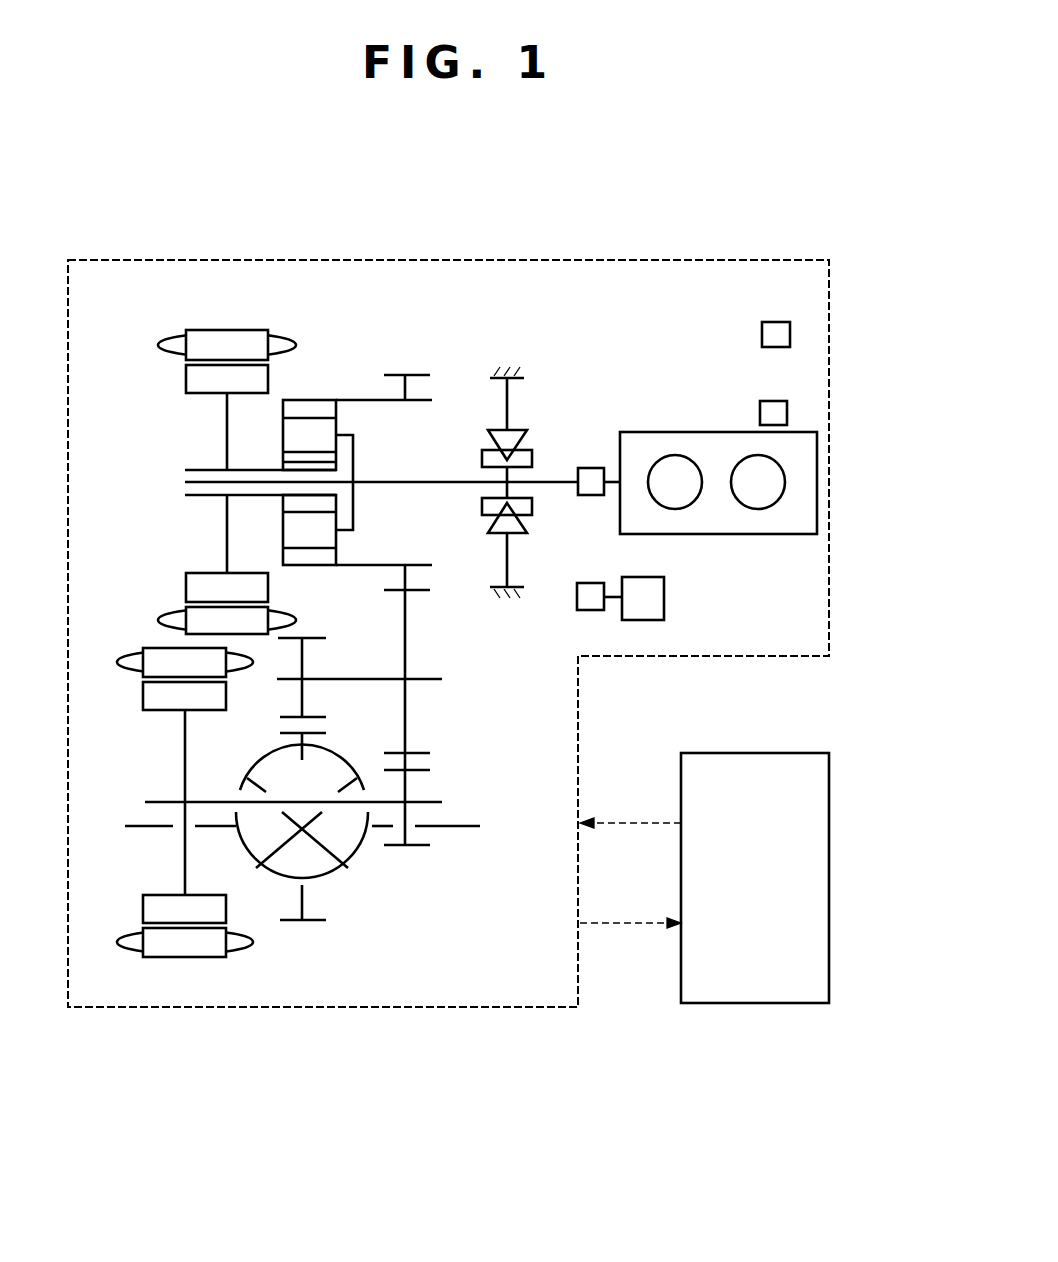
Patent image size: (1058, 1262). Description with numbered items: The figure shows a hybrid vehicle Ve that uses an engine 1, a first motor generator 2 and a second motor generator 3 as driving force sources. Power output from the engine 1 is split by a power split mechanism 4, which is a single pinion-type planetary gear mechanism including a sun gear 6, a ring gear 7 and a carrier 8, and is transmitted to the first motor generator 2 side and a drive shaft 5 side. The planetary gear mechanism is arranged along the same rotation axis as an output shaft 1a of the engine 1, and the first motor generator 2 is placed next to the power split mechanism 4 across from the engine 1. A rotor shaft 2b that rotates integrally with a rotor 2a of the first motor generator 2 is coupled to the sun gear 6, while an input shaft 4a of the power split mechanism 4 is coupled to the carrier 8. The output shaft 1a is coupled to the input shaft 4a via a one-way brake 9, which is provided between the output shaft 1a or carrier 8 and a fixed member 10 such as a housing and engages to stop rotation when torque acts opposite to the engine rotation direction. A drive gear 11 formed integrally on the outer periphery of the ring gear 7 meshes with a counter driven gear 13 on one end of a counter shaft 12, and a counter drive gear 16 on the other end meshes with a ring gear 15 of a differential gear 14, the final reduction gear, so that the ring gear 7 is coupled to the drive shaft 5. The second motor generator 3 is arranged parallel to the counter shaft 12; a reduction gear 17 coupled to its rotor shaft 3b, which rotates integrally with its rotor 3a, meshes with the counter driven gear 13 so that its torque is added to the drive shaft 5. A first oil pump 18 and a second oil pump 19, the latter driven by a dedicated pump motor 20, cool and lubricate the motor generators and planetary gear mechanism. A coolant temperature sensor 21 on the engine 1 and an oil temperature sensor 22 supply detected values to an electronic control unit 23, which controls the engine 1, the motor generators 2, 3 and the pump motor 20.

The vehicle Ve is at (596, 254).
The engine 1 is at (718, 534).
The output shaft 1a is at (556, 484).
The first motor generator 2 is at (148, 372).
The rotor 2a is at (188, 594).
The rotor shaft 2b is at (255, 497).
The second motor generator 3 is at (143, 739).
The rotor 3a is at (146, 910).
The rotor shaft 3b is at (208, 802).
The power split mechanism 4 is at (357, 462).
The input shaft 4a is at (428, 481).
The drive shaft 5 is at (125, 812).
The sun gear 6 is at (290, 462).
The ring gear 7 is at (310, 400).
The carrier 8 is at (360, 450).
The one-way brake 9 is at (526, 413).
The fixed member 10 is at (512, 598).
The drive gear 11 is at (397, 375).
The counter shaft 12 is at (352, 678).
The counter driven gear 13 is at (385, 592).
The differential gear 14 is at (346, 878).
The ring gear 15 is at (293, 922).
The counter drive gear 16 is at (310, 637).
The reduction gear 17 is at (410, 847).
The first oil pump 18 is at (592, 467).
The second oil pump 19 is at (588, 610).
The pump motor 20 is at (637, 585).
The coolant temperature sensor 21 is at (770, 410).
The oil temperature sensor 22 is at (775, 328).
The electronic control unit 23 is at (755, 1004).